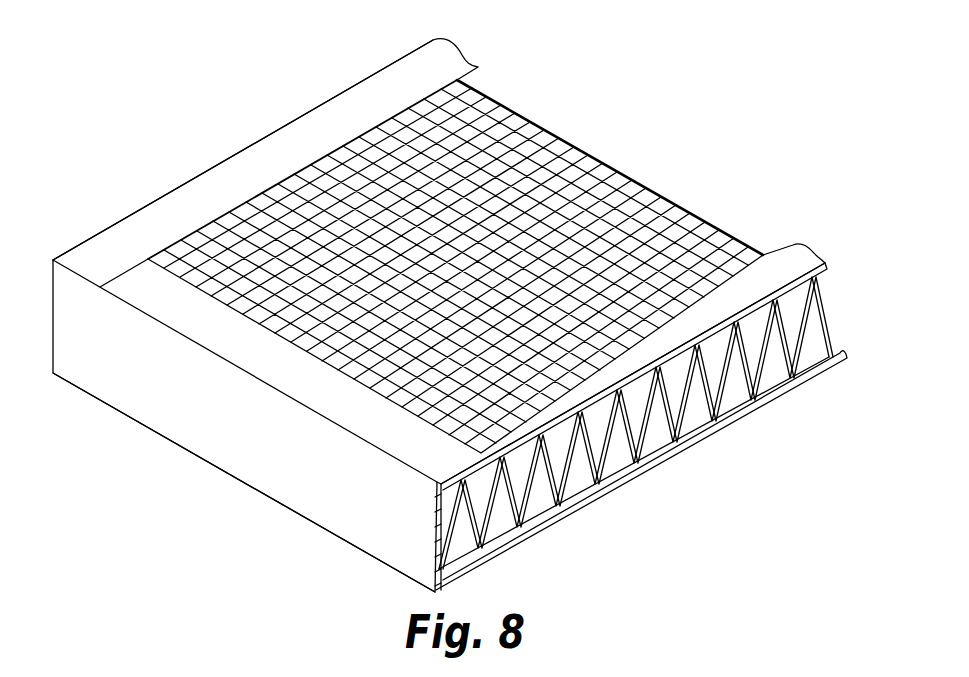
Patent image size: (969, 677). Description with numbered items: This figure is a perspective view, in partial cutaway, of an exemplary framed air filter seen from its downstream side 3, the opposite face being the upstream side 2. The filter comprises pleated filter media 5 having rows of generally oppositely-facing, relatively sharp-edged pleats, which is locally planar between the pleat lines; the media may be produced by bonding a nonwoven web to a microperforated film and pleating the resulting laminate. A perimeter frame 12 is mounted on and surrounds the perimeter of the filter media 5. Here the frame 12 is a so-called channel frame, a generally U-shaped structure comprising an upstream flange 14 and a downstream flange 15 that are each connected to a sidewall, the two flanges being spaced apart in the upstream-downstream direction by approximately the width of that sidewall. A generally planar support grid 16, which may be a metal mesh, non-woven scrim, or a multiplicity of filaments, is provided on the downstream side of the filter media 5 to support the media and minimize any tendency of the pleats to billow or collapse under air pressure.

The upstream side 2 is at (729, 487).
The downstream side 3 is at (189, 66).
The filter media 5 is at (822, 330).
The frame 12 is at (128, 392).
The upstream flange 14 is at (128, 288).
The downstream flange 15 is at (332, 500).
The support grid 16 is at (570, 163).